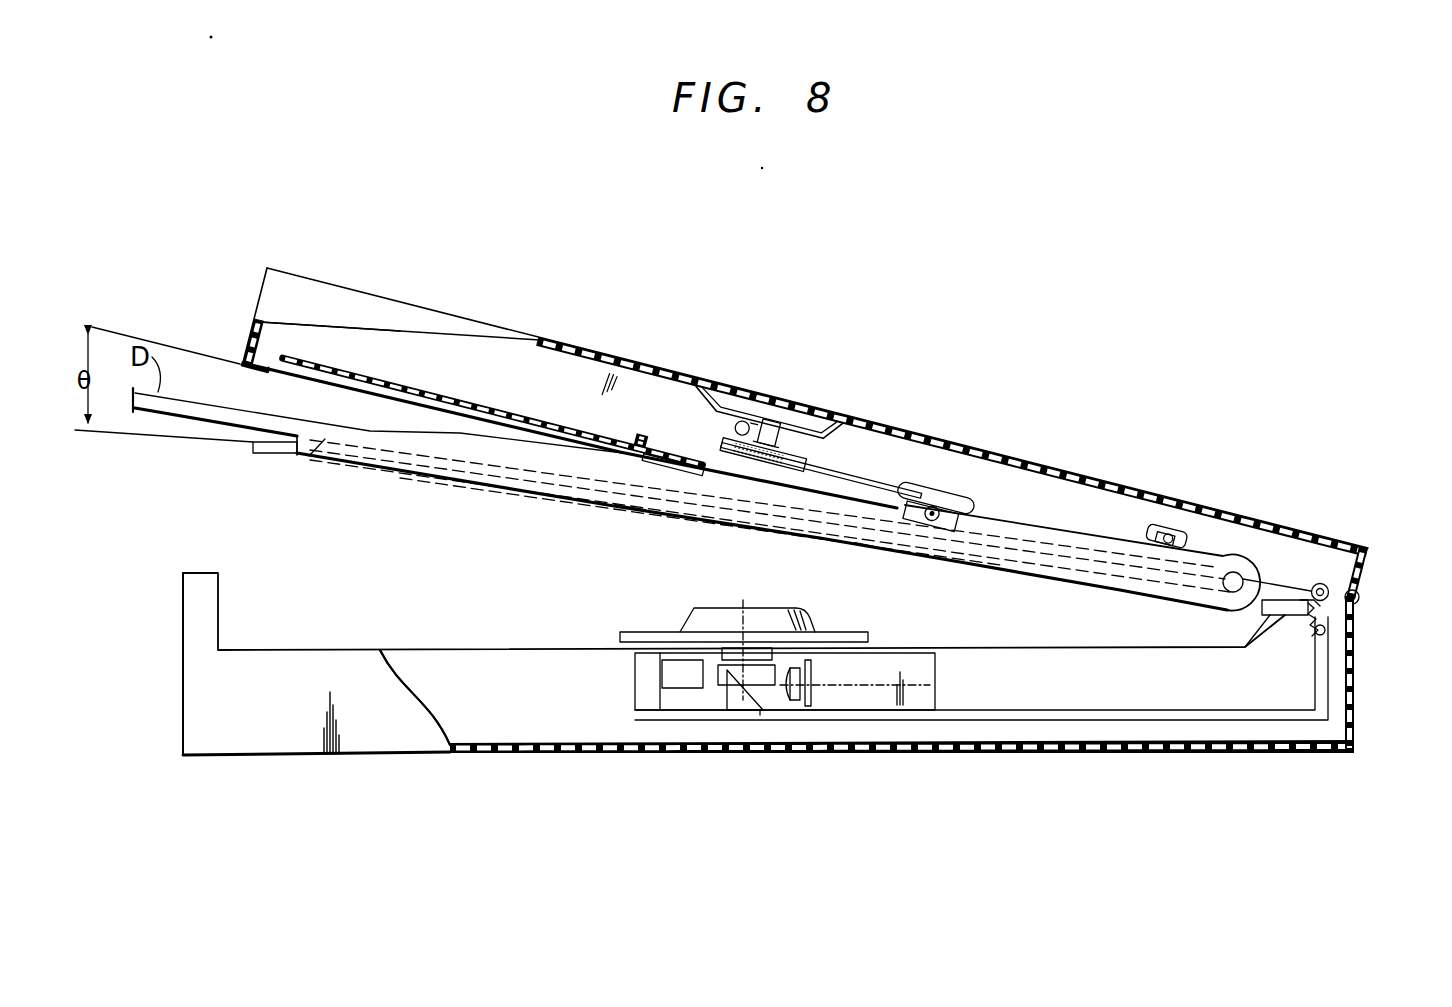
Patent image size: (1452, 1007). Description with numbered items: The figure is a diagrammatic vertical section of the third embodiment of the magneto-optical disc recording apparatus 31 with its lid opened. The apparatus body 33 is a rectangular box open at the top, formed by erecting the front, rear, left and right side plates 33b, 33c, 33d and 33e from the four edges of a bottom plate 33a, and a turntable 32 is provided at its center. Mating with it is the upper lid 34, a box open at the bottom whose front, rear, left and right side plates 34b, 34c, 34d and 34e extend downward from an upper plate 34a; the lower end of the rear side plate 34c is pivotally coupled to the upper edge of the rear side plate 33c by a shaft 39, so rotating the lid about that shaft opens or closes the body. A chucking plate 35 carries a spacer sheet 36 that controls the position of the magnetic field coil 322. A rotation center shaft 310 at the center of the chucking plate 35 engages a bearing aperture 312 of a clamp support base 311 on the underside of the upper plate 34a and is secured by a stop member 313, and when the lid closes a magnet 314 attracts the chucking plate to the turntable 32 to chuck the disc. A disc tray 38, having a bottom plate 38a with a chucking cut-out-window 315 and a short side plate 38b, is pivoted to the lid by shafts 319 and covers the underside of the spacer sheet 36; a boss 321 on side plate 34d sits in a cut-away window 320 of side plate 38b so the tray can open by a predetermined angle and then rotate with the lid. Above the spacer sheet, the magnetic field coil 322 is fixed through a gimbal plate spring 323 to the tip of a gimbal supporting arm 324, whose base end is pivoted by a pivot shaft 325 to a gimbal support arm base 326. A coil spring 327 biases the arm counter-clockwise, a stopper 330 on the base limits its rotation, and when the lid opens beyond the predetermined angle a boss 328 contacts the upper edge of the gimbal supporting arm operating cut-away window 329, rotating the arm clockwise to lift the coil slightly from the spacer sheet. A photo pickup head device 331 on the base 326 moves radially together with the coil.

The magneto-optical disc recording apparatus 31 is at (1018, 453).
The turntable 32 is at (630, 632).
The apparatus body 33 is at (764, 684).
The bottom plate 33a is at (510, 756).
The front side plate 33b is at (183, 652).
The rear side plate 33c is at (1360, 668).
The left side plate 33d is at (447, 660).
The right side plate 33e is at (415, 697).
The upper lid 34 is at (800, 409).
The upper plate 34a is at (567, 344).
The front side plate 34b is at (253, 328).
The rear side plate 34c is at (1367, 566).
The left side plate 34d is at (593, 378).
The right side plate 34e is at (330, 326).
The chucking plate 35 is at (673, 450).
The spacer sheet 36 is at (447, 397).
The disc tray 38 is at (681, 499).
The bottom plate 38a is at (262, 453).
The side plate 38b is at (303, 462).
The shaft 39 is at (1360, 598).
The rotation center shaft 310 is at (741, 418).
The clamp support base 311 is at (805, 446).
The bearing aperture 312 is at (790, 432).
The stop member 313 is at (776, 414).
The magnet 314 is at (648, 436).
The chucking cut-out-window 315 is at (633, 510).
The shaft 319 is at (1231, 571).
The cut-away window 320 is at (1000, 470).
The boss 321 is at (968, 500).
The magnetic field coil 322 is at (871, 462).
The gimbal plate spring 323 is at (935, 492).
The gimbal supporting arm 324 is at (1063, 520).
The pivot shaft 325 is at (1323, 584).
The gimbal support arm base 326 is at (1325, 698).
The coil spring 327 is at (1327, 608).
The boss 328 is at (1146, 520).
The gimbal supporting arm operating cut-away window 329 is at (1172, 534).
The stopper 330 is at (1266, 600).
The photo pickup head device 331 is at (905, 665).